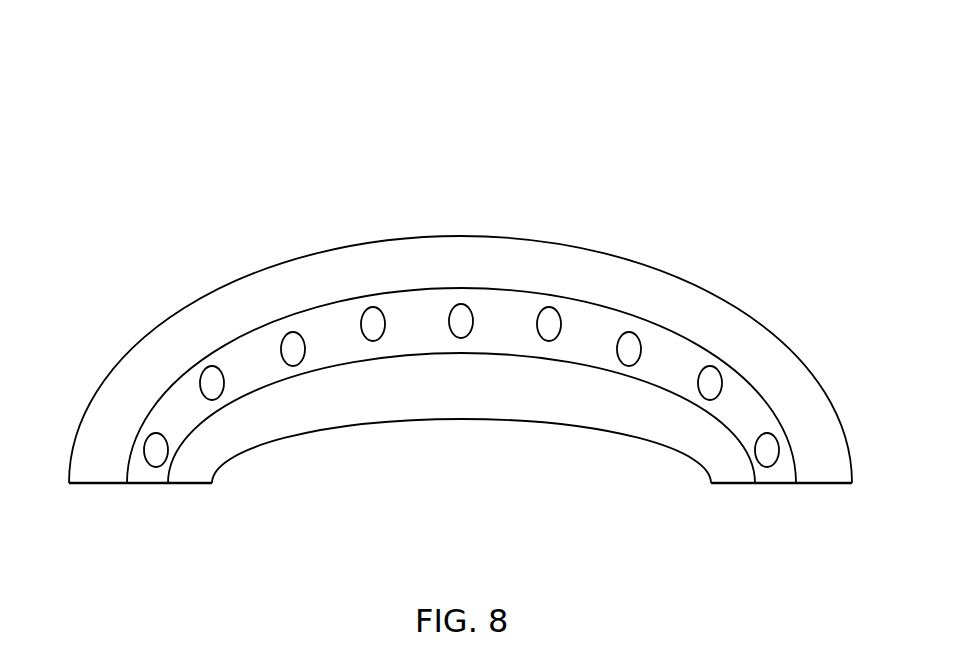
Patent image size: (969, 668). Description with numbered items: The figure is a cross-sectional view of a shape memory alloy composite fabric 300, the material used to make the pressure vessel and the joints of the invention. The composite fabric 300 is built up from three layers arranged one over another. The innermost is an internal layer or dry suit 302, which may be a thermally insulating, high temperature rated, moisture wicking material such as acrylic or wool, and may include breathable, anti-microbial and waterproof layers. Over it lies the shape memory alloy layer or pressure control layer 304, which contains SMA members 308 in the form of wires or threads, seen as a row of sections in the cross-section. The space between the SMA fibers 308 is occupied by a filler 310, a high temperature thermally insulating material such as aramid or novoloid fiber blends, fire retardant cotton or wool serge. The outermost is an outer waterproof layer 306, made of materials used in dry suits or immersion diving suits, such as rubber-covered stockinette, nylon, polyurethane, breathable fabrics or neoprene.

The shape memory alloy composite fabric 300 is at (157, 85).
The internal layer 302 is at (279, 419).
The shape memory alloy layer 304 is at (242, 357).
The outer waterproof layer 306 is at (605, 268).
The SMA members 308 is at (643, 340).
The filler 310 is at (503, 323).